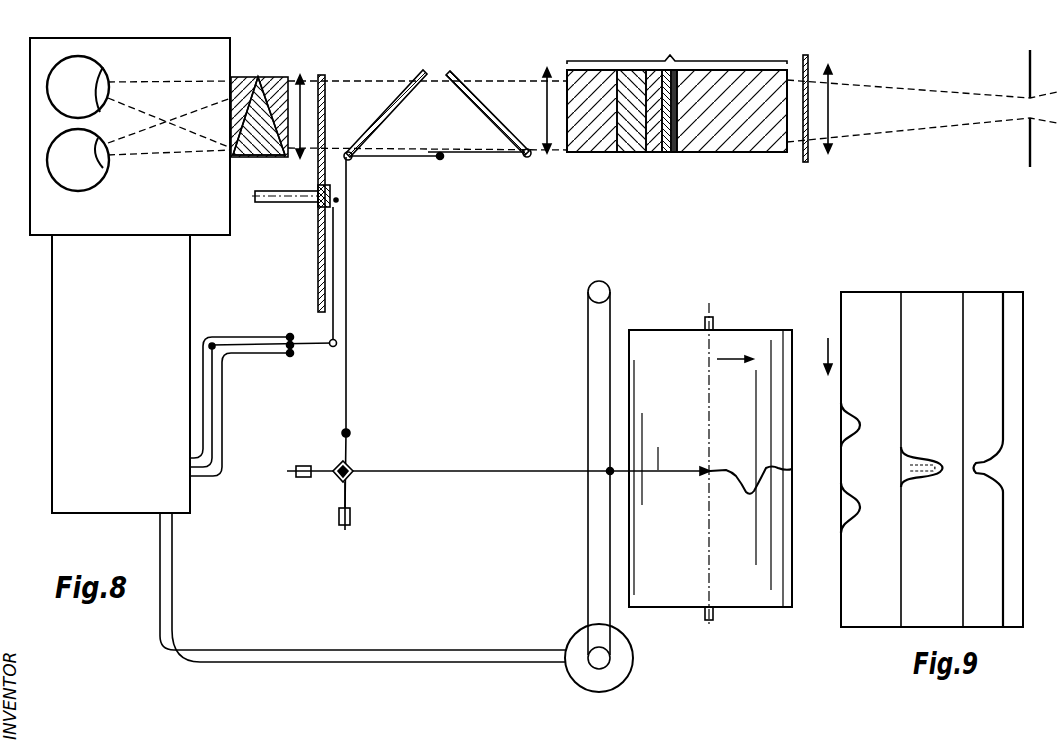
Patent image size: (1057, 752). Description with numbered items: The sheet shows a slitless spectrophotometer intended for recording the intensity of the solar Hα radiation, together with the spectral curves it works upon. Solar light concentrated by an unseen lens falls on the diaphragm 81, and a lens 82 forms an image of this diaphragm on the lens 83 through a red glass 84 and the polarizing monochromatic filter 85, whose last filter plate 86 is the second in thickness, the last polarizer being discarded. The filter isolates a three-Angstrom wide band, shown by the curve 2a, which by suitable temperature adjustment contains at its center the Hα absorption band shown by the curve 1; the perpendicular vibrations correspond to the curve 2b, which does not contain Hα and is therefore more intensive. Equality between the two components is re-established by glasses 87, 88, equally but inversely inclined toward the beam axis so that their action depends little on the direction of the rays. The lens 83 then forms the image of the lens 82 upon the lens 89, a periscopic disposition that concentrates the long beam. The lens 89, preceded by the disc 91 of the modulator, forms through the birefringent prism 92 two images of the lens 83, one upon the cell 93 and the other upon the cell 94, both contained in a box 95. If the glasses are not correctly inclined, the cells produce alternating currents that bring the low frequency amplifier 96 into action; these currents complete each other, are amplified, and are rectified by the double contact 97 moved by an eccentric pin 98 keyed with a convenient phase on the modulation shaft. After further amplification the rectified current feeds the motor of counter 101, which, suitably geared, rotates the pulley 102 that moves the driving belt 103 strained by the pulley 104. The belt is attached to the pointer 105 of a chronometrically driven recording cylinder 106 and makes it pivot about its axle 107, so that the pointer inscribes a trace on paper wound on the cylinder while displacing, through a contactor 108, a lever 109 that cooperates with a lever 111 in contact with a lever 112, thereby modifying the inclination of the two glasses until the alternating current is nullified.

In FIG. 8, the diaphragm 81 is at (1028, 98).
In FIG. 8, the lens 82 is at (829, 65).
In FIG. 8, the lens 83 is at (547, 68).
In FIG. 8, the red glass 84 is at (806, 163).
In FIG. 8, the polarizing monochromatic filter 85 is at (677, 106).
In FIG. 8, the last filter plate 86 is at (598, 135).
In FIG. 8, the glass 87 is at (470, 96).
In FIG. 8, the glass 88 is at (392, 107).
In FIG. 8, the lens 89 is at (301, 75).
In FIG. 8, the disc of the modulator 91 is at (323, 95).
In FIG. 8, the birefringent prism 92 is at (258, 79).
In FIG. 8, the cell 93 is at (78, 87).
In FIG. 8, the cell 94 is at (78, 160).
In FIG. 8, the box 95 is at (227, 212).
In FIG. 8, the low frequency amplifier 96 is at (121, 374).
In FIG. 8, the double contact 97 is at (290, 356).
In FIG. 8, the eccentric pin 98 is at (338, 200).
In FIG. 8, the motor of counter 101 is at (620, 676).
In FIG. 8, the pulley 102 is at (604, 659).
In FIG. 8, the driving belt 103 is at (588, 548).
In FIG. 8, the pulley 104 is at (589, 293).
In FIG. 8, the pointer 105 is at (485, 470).
In FIG. 8, the recording cylinder 106 is at (641, 330).
In FIG. 8, the axle 107 is at (355, 470).
In FIG. 8, the contactor 108 is at (341, 445).
In FIG. 8, the lever 109 is at (350, 276).
In FIG. 8, the lever 111 is at (387, 158).
In FIG. 8, the lever 112 is at (490, 154).
In FIG. 9, the curve 1 is at (1005, 310).
In FIG. 9, the curve 2a is at (903, 302).
In FIG. 9, the curve 2b is at (843, 318).